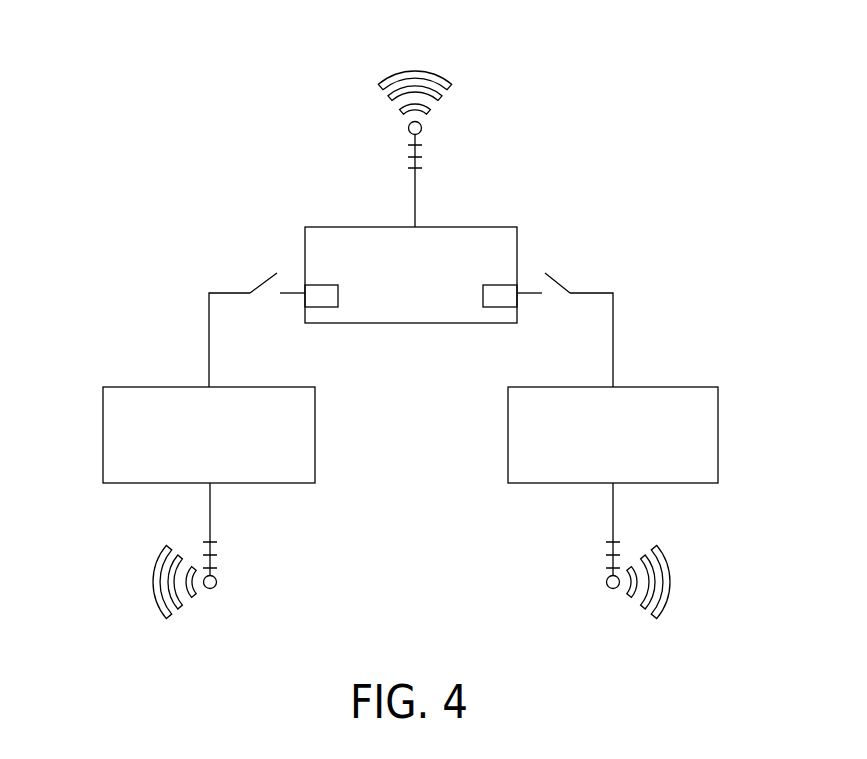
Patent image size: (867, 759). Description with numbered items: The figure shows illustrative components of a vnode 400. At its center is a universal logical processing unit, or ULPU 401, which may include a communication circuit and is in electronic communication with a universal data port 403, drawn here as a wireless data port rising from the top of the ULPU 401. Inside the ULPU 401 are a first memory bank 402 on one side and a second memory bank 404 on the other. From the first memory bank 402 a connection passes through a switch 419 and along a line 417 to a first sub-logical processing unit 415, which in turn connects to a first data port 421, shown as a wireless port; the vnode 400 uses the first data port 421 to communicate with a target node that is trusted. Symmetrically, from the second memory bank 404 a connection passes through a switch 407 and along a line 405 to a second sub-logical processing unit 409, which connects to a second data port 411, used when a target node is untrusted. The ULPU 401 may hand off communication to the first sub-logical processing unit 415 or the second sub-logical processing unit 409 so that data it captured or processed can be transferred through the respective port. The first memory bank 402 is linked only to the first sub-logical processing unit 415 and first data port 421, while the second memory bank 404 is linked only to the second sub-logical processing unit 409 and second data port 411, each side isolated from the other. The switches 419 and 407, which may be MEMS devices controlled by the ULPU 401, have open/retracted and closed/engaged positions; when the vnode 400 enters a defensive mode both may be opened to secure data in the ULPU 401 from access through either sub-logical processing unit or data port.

The vnode 400 is at (146, 58).
The universal logical processing unit (ULPU) 401 is at (517, 238).
The first memory bank 402 is at (338, 296).
The universal data port 403 is at (417, 197).
The second memory bank 404 is at (483, 297).
The connection line to second device 405 is at (613, 341).
The switch 407 is at (560, 283).
The second sub-logical processing unit 409 is at (718, 437).
The second data port 411 is at (615, 516).
The first sub-logical processing unit 415 is at (103, 437).
The connection line to first device 417 is at (209, 345).
The switch 419 is at (266, 281).
The first data port 421 is at (209, 516).